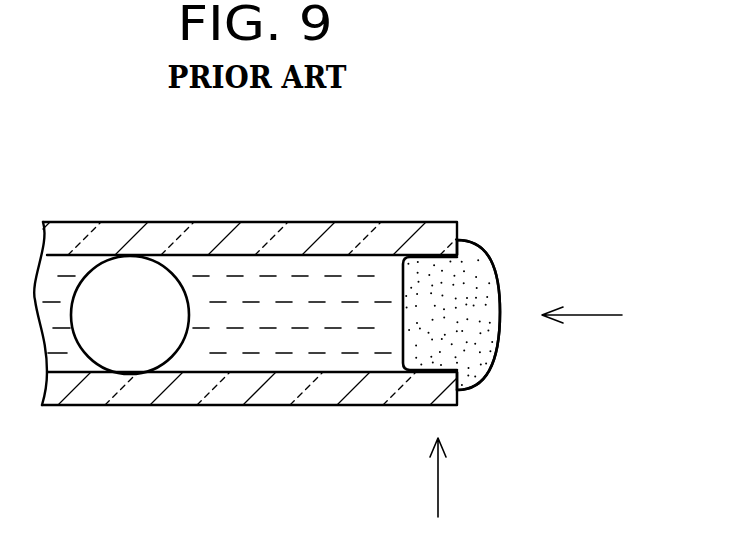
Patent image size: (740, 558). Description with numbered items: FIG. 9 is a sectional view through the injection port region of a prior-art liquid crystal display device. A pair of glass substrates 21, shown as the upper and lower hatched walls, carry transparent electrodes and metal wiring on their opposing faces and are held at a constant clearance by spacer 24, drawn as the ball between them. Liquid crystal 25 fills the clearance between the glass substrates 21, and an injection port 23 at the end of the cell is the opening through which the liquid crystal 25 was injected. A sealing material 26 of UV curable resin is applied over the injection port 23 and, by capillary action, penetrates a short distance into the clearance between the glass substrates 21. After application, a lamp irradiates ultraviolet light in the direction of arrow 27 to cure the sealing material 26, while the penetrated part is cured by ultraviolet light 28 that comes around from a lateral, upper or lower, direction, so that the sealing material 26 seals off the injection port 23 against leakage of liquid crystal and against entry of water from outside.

The glass substrates 21 is at (262, 233).
The injection port 23 is at (392, 316).
The spacer 24 is at (130, 306).
The liquid crystal 25 is at (358, 288).
The sealing material 26 is at (473, 318).
The arrow indicating direction of ultraviolet light irradiation 27 is at (587, 315).
The ultraviolet light 28 is at (438, 480).